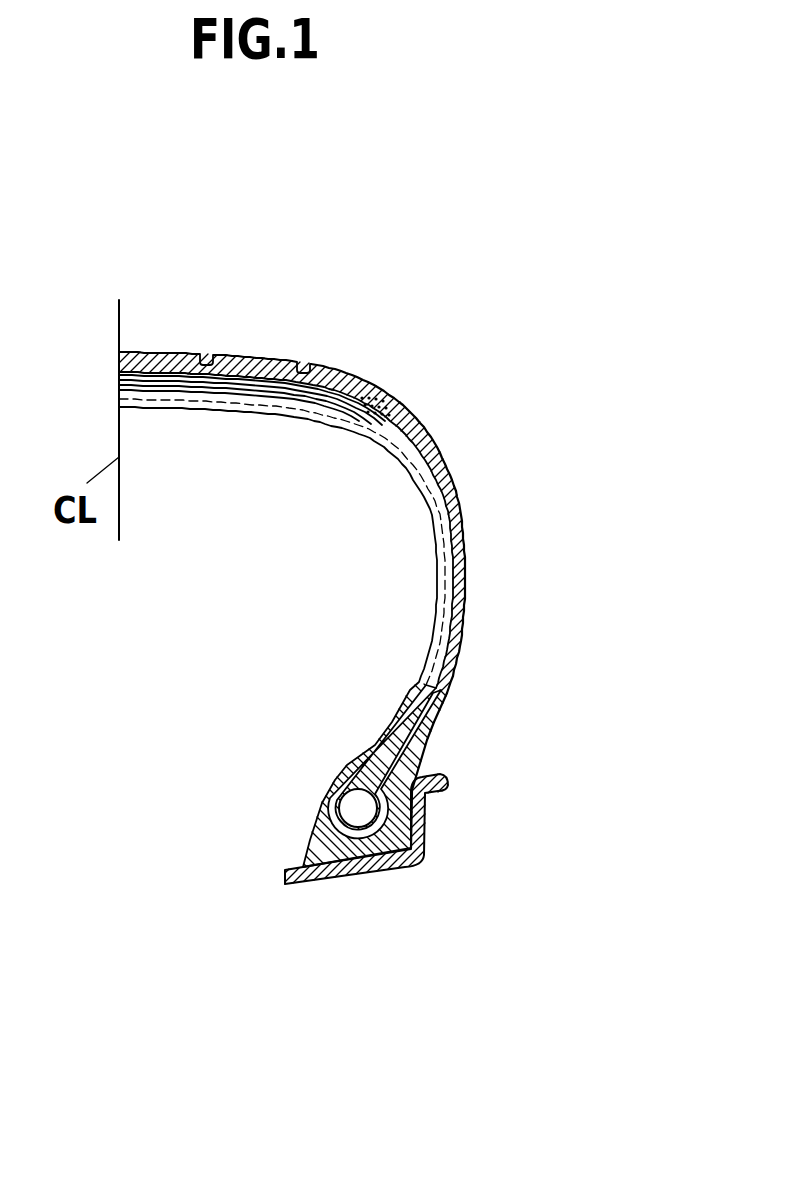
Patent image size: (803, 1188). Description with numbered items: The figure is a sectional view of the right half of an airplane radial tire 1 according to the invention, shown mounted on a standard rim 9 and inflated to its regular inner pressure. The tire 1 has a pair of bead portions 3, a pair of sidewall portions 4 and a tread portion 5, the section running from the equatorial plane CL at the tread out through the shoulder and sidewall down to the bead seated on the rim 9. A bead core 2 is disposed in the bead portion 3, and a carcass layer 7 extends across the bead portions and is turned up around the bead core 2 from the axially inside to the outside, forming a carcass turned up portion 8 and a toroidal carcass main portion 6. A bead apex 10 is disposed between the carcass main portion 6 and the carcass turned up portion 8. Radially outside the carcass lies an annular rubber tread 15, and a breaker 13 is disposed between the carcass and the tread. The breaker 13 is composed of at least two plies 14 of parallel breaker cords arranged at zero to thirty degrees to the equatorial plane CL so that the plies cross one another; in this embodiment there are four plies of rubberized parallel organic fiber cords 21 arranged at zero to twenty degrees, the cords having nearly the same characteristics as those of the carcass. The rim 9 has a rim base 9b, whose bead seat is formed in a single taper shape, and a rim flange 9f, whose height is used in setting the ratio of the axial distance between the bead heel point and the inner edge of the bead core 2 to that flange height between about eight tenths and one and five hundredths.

The airplane radial tire 1 is at (506, 426).
The bead core 2 is at (352, 814).
The bead portion 3 is at (274, 851).
The sidewall portion 4 is at (497, 614).
The tread portion 5 is at (319, 324).
The carcass main portion 6 is at (433, 533).
The carcass layer 7 is at (233, 573).
The carcass turned up portion 8 is at (375, 738).
The rim 9 is at (373, 870).
The rim base 9b is at (322, 882).
The rim flange 9f is at (417, 825).
The bead apex 10 is at (350, 767).
The breaker 13 is at (287, 212).
The breaker ply 14 is at (262, 360).
The rubber tread 15 is at (352, 378).
The organic fiber cord 21 is at (388, 408).